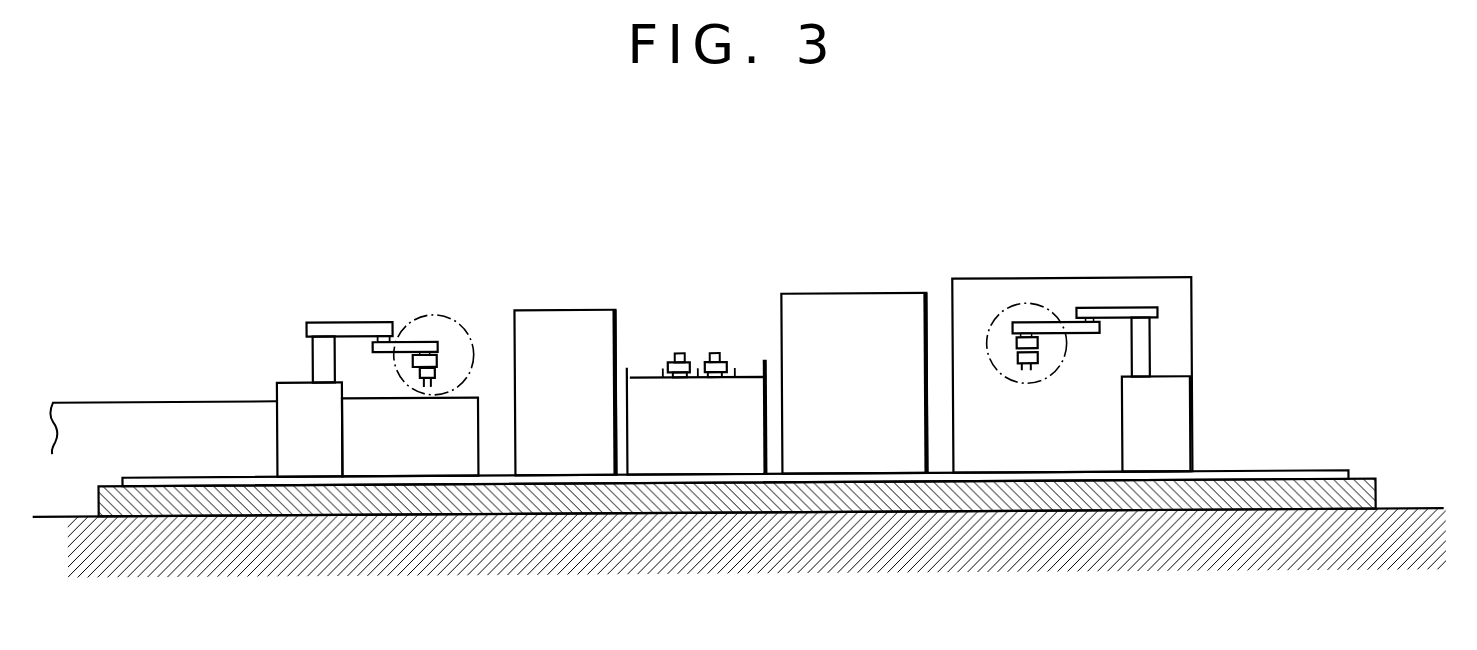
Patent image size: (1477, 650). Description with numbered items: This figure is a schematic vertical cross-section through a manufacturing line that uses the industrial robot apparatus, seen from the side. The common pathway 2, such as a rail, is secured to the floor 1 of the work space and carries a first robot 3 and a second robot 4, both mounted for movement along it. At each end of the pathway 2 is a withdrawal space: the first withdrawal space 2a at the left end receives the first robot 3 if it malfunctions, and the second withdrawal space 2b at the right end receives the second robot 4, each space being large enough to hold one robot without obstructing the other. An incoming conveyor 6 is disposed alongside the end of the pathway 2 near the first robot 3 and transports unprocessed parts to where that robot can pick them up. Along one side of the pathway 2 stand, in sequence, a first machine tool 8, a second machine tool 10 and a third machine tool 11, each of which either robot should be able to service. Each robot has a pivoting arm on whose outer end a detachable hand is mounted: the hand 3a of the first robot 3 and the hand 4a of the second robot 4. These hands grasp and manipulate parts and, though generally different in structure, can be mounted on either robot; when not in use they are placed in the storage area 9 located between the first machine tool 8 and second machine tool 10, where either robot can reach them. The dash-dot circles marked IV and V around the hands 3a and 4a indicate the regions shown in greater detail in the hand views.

The floor 1 is at (1405, 512).
The common pathway 2 is at (847, 474).
The first withdrawal space 2a is at (183, 474).
The second withdrawal space 2b is at (1282, 474).
The first robot 3 is at (323, 318).
The hand of first robot 3a is at (410, 377).
The second robot 4 is at (1132, 310).
The hand of second robot 4a is at (716, 353).
The incoming conveyor 6 is at (118, 398).
The first machine tool 8 is at (533, 309).
The storage area 9 is at (763, 362).
The second machine tool 10 is at (847, 294).
The third machine tool 11 is at (1062, 280).
The section IV view circle IV is at (428, 313).
The section V view circle V is at (1008, 305).